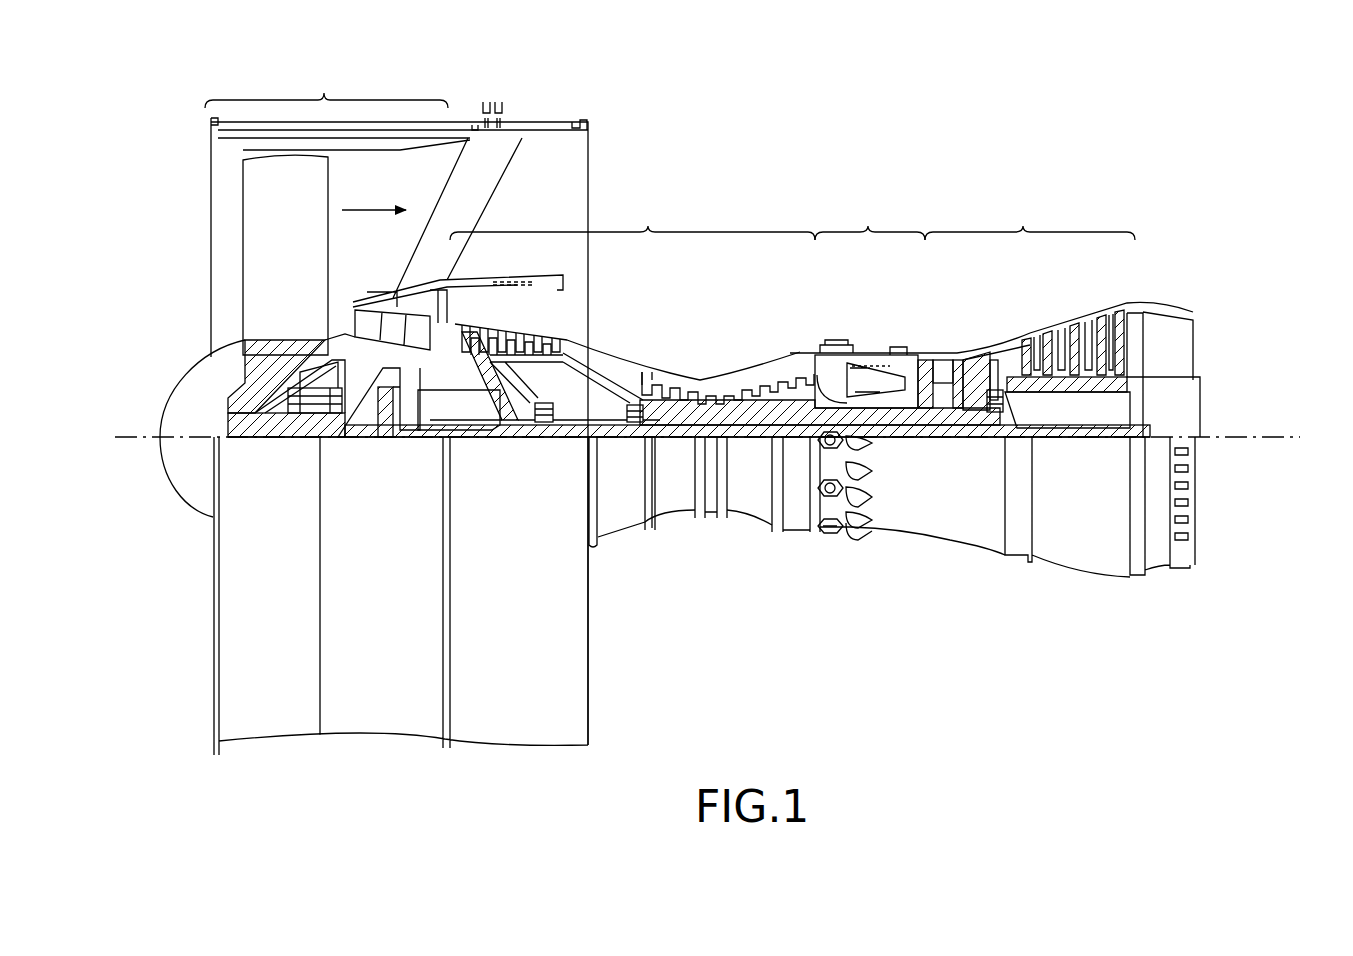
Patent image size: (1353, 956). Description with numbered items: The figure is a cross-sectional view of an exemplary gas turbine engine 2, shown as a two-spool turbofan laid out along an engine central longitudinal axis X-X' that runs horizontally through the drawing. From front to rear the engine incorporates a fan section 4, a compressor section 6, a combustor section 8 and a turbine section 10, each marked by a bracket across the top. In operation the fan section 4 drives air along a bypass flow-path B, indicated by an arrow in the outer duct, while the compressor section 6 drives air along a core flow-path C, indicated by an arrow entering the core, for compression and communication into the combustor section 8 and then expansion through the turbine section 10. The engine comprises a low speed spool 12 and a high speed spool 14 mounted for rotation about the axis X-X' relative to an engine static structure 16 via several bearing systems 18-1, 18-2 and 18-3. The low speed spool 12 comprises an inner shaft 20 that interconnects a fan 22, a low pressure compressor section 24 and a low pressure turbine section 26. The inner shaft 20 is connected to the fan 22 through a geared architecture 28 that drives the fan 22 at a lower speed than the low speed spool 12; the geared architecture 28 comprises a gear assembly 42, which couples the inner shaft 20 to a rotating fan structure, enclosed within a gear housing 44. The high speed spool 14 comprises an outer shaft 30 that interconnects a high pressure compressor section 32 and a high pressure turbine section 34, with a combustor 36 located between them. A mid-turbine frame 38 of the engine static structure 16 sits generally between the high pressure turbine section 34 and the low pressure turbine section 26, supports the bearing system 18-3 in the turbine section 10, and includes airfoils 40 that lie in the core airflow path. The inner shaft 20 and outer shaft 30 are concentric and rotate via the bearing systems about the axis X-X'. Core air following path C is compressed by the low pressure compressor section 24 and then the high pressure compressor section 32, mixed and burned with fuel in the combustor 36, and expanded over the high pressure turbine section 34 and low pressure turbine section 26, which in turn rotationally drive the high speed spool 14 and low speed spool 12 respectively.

The gas turbine engine 2 is at (916, 170).
The fan section 4 is at (304, 292).
The compressor section 6 is at (632, 218).
The combustor section 8 is at (870, 218).
The turbine section 10 is at (1062, 316).
The low speed spool 12 is at (757, 448).
The high speed spool 14 is at (795, 406).
The engine static structure 16 is at (383, 718).
The bearing system 18-1 is at (300, 415).
The bearing system 18-2 is at (547, 422).
The bearing system 18-3 is at (980, 418).
The inner shaft 20 is at (612, 440).
The fan 22 is at (298, 256).
The low pressure compressor section 24 is at (517, 328).
The low pressure turbine section 26 is at (1068, 327).
The geared architecture 28 is at (410, 449).
The outer shaft 30 is at (862, 420).
The high pressure compressor section 32 is at (735, 406).
The high pressure turbine section 34 is at (938, 362).
The combustor 36 is at (865, 378).
The mid-turbine frame 38 is at (985, 357).
The airfoils 40 is at (995, 390).
The gear assembly 42 is at (418, 420).
The gear housing 44 is at (418, 394).
The bypass flow-path B is at (370, 212).
The core flow-path C is at (352, 322).
The engine central longitudinal axis X is at (133, 432).